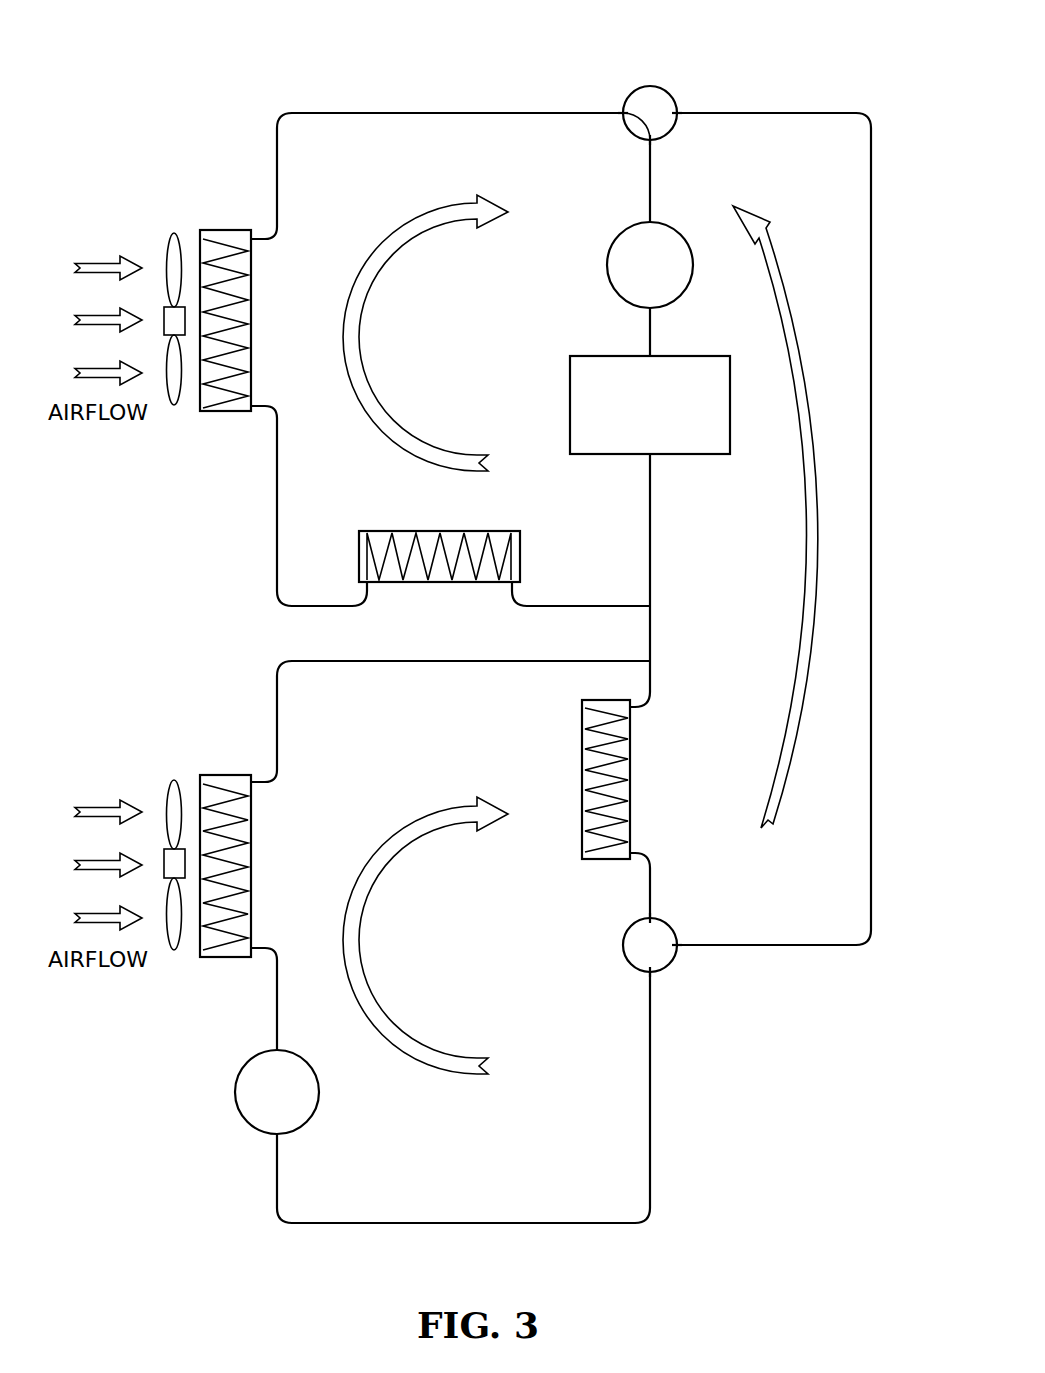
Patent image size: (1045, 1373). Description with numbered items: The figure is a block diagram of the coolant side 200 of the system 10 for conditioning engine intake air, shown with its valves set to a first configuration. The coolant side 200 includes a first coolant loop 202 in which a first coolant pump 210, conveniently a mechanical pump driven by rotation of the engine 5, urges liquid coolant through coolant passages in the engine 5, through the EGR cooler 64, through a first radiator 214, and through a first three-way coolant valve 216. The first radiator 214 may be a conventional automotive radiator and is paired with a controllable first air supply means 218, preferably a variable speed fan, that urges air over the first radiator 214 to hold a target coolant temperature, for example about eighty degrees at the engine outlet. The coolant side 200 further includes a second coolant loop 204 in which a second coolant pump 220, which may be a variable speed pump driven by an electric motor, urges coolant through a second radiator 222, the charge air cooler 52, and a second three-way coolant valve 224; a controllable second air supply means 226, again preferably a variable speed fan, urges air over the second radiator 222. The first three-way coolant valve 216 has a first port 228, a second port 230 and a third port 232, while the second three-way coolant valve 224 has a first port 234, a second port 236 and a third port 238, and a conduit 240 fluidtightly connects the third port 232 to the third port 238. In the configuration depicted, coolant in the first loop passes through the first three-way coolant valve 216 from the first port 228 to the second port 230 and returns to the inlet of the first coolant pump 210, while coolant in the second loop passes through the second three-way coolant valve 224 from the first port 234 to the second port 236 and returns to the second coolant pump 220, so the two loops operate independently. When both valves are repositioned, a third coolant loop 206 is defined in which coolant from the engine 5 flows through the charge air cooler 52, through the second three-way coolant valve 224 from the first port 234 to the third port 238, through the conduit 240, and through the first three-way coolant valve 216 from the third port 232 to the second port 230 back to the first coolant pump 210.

The system for conditioning intake air 10 is at (275, 45).
The coolant side 200 is at (227, 88).
The first coolant loop 202 is at (488, 113).
The second coolant loop 204 is at (333, 1223).
The third coolant loop 206 is at (871, 150).
The first coolant pump 210 is at (637, 223).
The engine 5 is at (590, 356).
The EGR cooler 64 is at (375, 531).
The charge air cooler 52 is at (582, 710).
The first radiator 214 is at (205, 230).
The first air supply means 218 is at (168, 243).
The second radiator 222 is at (203, 772).
The second air supply means 226 is at (170, 790).
The first three-way coolant valve 216 is at (672, 98).
The first port 228 is at (623, 113).
The second port 230 is at (650, 140).
The third port 232 is at (678, 116).
The second coolant pump 220 is at (243, 1120).
The second three-way coolant valve 224 is at (677, 955).
The first port 234 is at (648, 918).
The second port 236 is at (650, 972).
The third port 238 is at (677, 940).
The conduit 240 is at (871, 920).